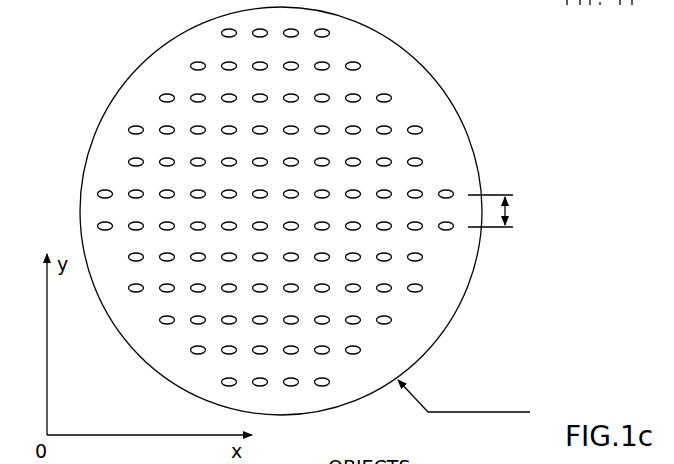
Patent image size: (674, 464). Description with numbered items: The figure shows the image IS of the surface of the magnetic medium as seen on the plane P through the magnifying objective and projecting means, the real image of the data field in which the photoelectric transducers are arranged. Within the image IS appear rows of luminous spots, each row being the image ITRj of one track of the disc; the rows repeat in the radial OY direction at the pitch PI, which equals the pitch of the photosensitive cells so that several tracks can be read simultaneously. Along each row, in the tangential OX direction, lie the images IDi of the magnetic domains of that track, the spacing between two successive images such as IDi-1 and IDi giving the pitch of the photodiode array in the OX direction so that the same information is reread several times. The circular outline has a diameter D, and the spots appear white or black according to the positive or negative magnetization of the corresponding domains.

The image of the surface IS is at (412, 80).
The image of a magnetic domain IDi-1 is at (322, 157).
The image of a magnetic domain IDi is at (285, 159).
The image of a track ITRj is at (275, 143).
The pitch PI is at (500, 211).
The diameter of image surface D is at (464, 396).